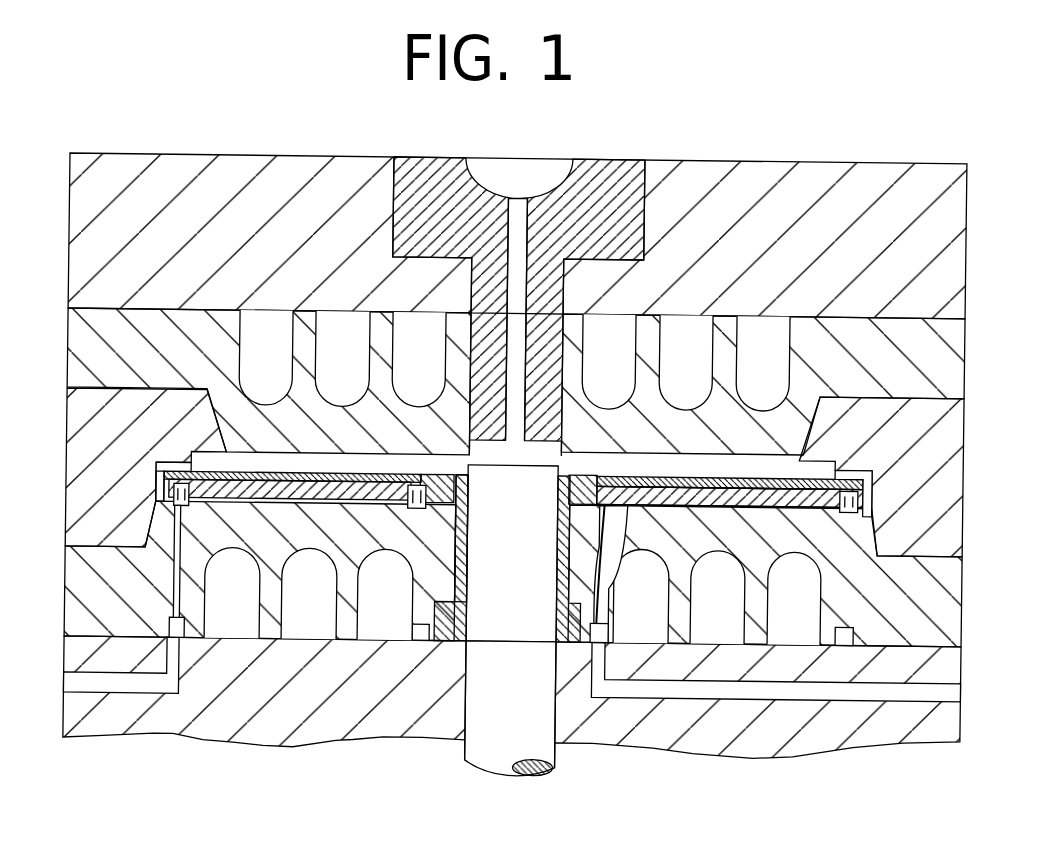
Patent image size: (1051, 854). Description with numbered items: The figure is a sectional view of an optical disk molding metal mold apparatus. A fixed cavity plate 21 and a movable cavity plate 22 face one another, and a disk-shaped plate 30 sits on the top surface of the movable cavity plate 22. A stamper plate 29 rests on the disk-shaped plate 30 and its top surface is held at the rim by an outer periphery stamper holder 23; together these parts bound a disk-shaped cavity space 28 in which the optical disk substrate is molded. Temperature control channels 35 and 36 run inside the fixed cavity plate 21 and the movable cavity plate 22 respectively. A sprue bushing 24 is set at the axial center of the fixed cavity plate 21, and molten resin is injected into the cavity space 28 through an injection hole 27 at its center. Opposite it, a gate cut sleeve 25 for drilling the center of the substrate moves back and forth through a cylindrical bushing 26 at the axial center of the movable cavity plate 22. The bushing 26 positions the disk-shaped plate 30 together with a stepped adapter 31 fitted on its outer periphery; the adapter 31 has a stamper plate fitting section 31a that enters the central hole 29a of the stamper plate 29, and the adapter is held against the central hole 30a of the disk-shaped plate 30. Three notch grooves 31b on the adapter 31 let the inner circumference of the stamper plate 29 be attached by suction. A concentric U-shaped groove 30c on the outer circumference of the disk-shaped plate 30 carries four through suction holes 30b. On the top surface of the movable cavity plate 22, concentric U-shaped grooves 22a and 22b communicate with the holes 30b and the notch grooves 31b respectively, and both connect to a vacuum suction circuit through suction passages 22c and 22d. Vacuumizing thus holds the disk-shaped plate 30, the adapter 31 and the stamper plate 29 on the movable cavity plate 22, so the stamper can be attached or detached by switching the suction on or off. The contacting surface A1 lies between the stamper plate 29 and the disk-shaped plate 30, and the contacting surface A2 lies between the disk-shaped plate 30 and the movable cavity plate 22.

The fixed cavity plate 21 is at (943, 366).
The movable cavity plate 22 is at (949, 606).
The U-shaped groove 22a is at (192, 500).
The U-shaped groove 22b is at (421, 503).
The suction passage 22c is at (603, 562).
The suction passage 22d is at (182, 597).
The outer periphery stamper holder 23 is at (947, 482).
The sprue bushing 24 is at (615, 158).
The gate cut sleeve 25 is at (524, 737).
The cylindrical bushing 26 is at (566, 622).
The injection hole 27 is at (518, 222).
The cavity space 28 is at (306, 468).
The stamper plate 29 is at (791, 479).
The central hole 29a is at (441, 466).
The disk-shaped plate 30 is at (727, 472).
The central hole 30a is at (461, 495).
The through suction holes 30b is at (171, 487).
The U-shaped groove 30c is at (184, 459).
The stepped adapter 31 is at (451, 470).
The stamper plate fitting section 31a is at (600, 464).
The notch grooves 31b is at (625, 488).
The temperature control channel 35 is at (256, 356).
The temperature control channel 36 is at (239, 610).
The contacting surface A1 is at (779, 499).
The contacting surface A2 is at (730, 499).